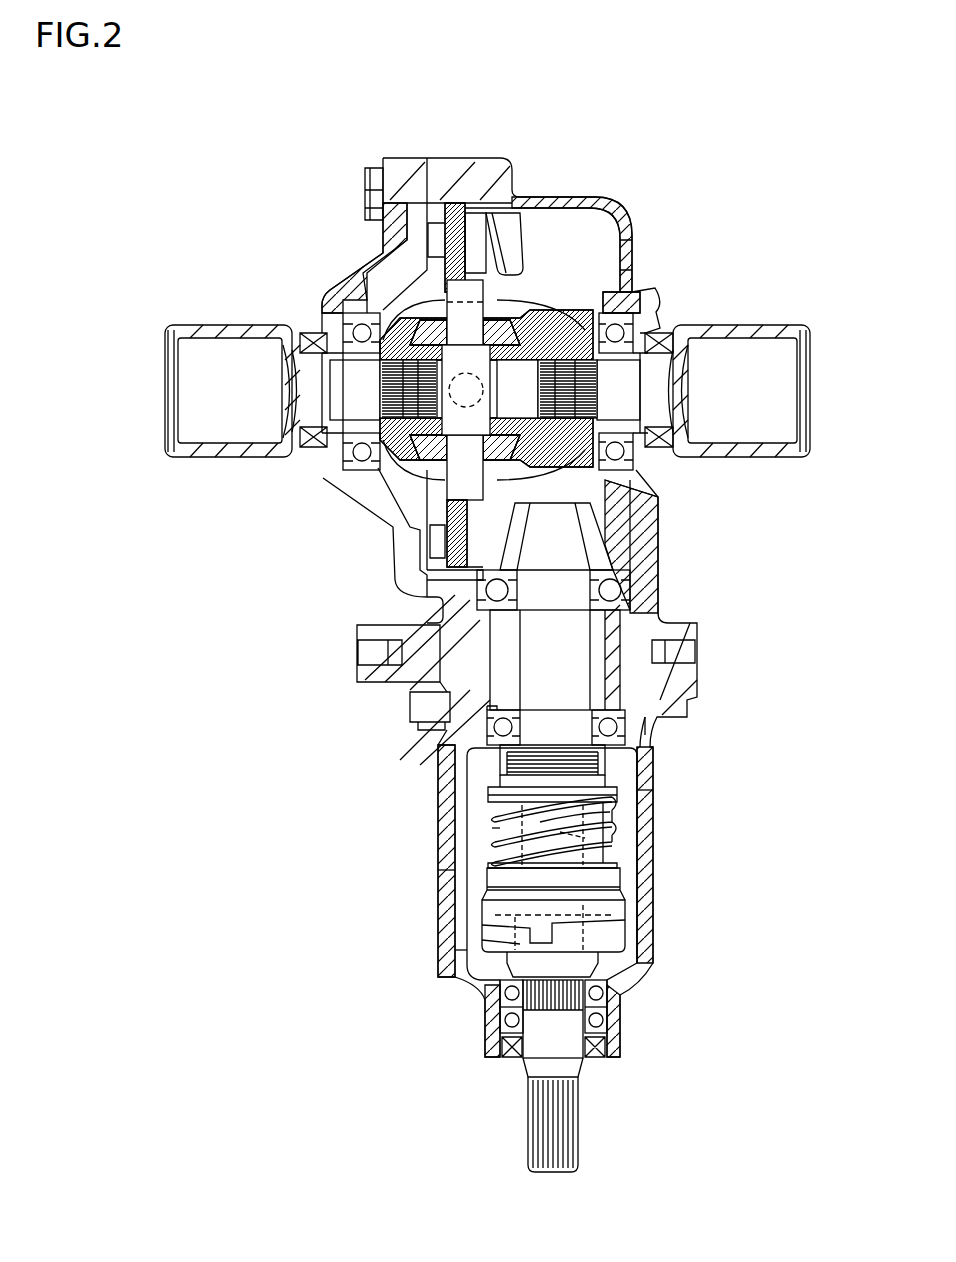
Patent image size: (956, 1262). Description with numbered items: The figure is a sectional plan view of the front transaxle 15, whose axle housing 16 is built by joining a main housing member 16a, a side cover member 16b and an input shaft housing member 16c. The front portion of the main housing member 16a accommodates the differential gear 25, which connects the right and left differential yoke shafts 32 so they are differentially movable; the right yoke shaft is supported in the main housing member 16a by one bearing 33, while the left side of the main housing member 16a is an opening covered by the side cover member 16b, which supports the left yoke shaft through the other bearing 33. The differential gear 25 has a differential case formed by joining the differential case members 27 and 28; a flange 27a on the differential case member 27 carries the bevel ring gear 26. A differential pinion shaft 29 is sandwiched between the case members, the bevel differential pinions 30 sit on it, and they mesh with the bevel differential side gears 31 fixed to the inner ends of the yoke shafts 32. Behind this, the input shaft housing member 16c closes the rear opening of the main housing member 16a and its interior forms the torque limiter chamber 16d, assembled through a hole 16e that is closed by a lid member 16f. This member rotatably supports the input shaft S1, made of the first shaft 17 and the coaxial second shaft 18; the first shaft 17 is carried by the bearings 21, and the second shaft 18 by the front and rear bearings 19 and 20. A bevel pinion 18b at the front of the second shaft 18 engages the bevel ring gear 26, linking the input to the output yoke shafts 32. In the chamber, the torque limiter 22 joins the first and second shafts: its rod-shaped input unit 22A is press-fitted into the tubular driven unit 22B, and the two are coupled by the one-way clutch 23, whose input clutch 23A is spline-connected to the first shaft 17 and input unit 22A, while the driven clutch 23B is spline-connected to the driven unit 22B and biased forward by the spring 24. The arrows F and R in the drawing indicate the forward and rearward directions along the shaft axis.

The front transaxle 15 is at (733, 111).
The axle housing 16 is at (606, 181).
The main housing member 16a is at (633, 270).
The side cover member 16b is at (342, 488).
The input shaft housing member 16c is at (648, 738).
The torque limiter chamber 16d is at (622, 810).
The hole 16e is at (448, 958).
The lid member 16f is at (443, 880).
The first shaft 17 is at (545, 1068).
The second shaft 18 is at (530, 650).
The bevel pinion 18b is at (600, 548).
The front bearing 19 is at (437, 603).
The rear bearing 20 is at (493, 740).
The bearings 21 is at (502, 1027).
The torque limiter 22 is at (708, 815).
The input unit 22A is at (568, 830).
The driven unit 22B is at (598, 826).
The one-way clutch 23 is at (708, 910).
The input clutch 23A is at (613, 934).
The driven clutch 23B is at (613, 905).
The spring 24 is at (495, 828).
The differential gear 25 is at (552, 259).
The bevel ring gear 26 is at (506, 226).
The differential case member 27 is at (372, 489).
The flange 27a is at (452, 228).
The differential case member 28 is at (567, 313).
The differential pinion shaft 29 is at (458, 313).
The bevel differential pinions 30 is at (430, 333).
The bevel differential side gears 31 is at (528, 330).
The differential yoke shafts 32 is at (219, 327).
The bearings 33 is at (341, 318).
The input shaft S1 is at (318, 797).
The forward direction F is at (542, 945).
The reverse direction R is at (564, 934).